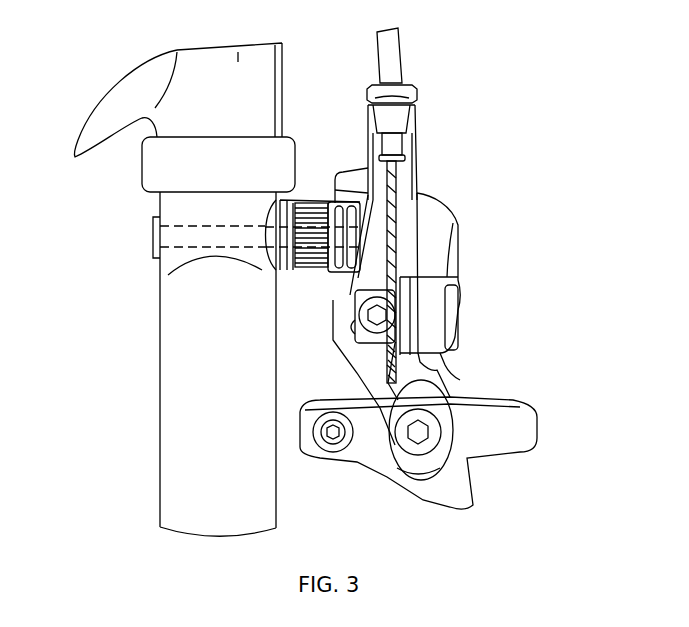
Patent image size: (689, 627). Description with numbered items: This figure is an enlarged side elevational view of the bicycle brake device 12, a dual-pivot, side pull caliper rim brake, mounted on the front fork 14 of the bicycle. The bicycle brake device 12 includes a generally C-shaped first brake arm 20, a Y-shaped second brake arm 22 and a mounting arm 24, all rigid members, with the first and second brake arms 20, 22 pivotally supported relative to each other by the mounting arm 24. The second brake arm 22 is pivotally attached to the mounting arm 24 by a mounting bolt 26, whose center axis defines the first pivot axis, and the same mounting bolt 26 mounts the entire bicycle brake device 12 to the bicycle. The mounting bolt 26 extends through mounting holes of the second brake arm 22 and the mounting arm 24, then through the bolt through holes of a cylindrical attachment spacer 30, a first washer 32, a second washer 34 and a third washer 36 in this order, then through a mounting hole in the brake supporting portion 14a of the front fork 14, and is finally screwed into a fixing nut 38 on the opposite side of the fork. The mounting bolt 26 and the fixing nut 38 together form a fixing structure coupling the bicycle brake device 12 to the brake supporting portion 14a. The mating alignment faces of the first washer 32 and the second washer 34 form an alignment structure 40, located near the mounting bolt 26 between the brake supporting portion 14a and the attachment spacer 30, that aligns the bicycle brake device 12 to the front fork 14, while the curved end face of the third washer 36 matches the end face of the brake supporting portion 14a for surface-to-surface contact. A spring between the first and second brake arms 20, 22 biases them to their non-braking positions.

The bicycle brake device 12 is at (482, 203).
The front fork 14 is at (147, 405).
The brake supporting portion 14a is at (283, 190).
The first brake arm 20 is at (472, 277).
The second brake arm 22 is at (432, 148).
The mounting arm 24 is at (342, 160).
The mounting bolt 26 is at (200, 256).
The attachment spacer 30 is at (312, 210).
The first washer 32 is at (290, 265).
The second washer 34 is at (285, 269).
The third washer 36 is at (263, 258).
The fixing nut 38 is at (153, 231).
The alignment structure 40 is at (318, 316).